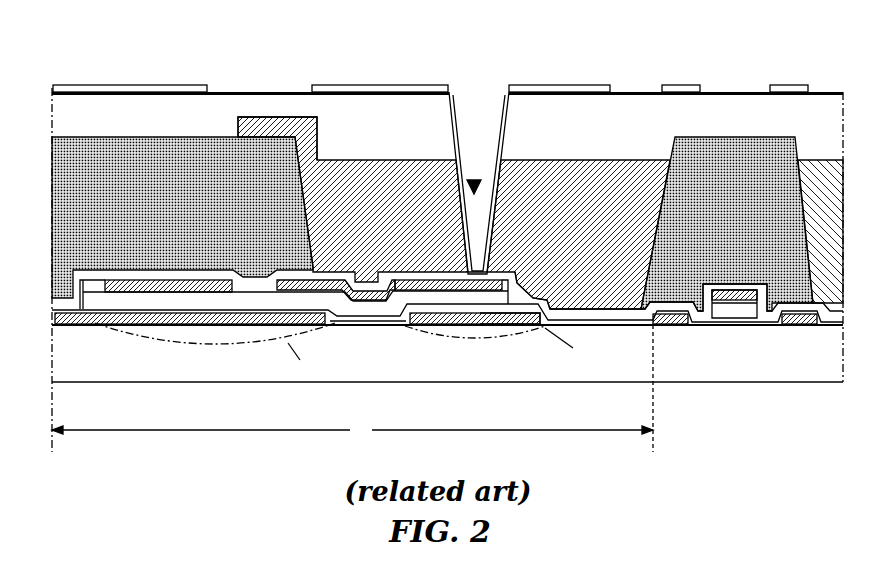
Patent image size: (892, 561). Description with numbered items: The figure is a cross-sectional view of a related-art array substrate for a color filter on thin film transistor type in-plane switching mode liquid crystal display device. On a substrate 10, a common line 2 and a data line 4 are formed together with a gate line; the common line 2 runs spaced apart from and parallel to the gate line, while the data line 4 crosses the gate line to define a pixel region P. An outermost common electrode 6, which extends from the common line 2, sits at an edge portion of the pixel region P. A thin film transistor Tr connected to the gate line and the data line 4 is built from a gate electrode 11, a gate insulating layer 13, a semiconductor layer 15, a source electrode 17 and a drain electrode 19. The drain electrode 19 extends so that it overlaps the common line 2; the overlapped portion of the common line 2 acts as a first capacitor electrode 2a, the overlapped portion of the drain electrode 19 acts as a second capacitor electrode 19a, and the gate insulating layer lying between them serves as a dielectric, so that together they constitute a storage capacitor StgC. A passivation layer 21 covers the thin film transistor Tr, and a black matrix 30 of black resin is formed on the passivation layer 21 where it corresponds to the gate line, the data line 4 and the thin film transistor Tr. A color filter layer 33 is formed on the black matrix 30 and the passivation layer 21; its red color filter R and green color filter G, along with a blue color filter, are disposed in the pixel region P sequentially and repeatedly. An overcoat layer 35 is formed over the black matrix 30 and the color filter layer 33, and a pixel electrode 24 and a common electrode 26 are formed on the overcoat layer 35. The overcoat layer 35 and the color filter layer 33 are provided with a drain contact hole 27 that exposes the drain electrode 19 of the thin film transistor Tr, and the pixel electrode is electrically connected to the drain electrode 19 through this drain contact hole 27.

The common line 2 is at (432, 324).
The first capacitor electrode 2a is at (510, 324).
The data line 4 is at (657, 268).
The outermost common electrode 6 is at (668, 325).
The substrate 10 is at (839, 376).
The gate electrode 11 is at (208, 325).
The gate insulating layer 13 is at (345, 320).
The semiconductor layer 15 is at (115, 300).
The source electrode 17 is at (62, 270).
The drain electrode 19 is at (325, 274).
The second capacitor electrode 19a is at (527, 266).
The passivation layer 21 is at (626, 266).
The pixel electrode 24 is at (380, 88).
The common electrode 26 is at (170, 87).
The drain contact hole 27 is at (474, 180).
The black matrix 30 is at (113, 150).
The color filter layer 33 is at (382, 160).
The overcoat layer 35 is at (240, 103).
The red color filter R is at (438, 191).
The green color filter G is at (820, 231).
The thin film transistor Tr is at (215, 351).
The storage capacitor StgC is at (507, 343).
The pixel region P is at (352, 388).